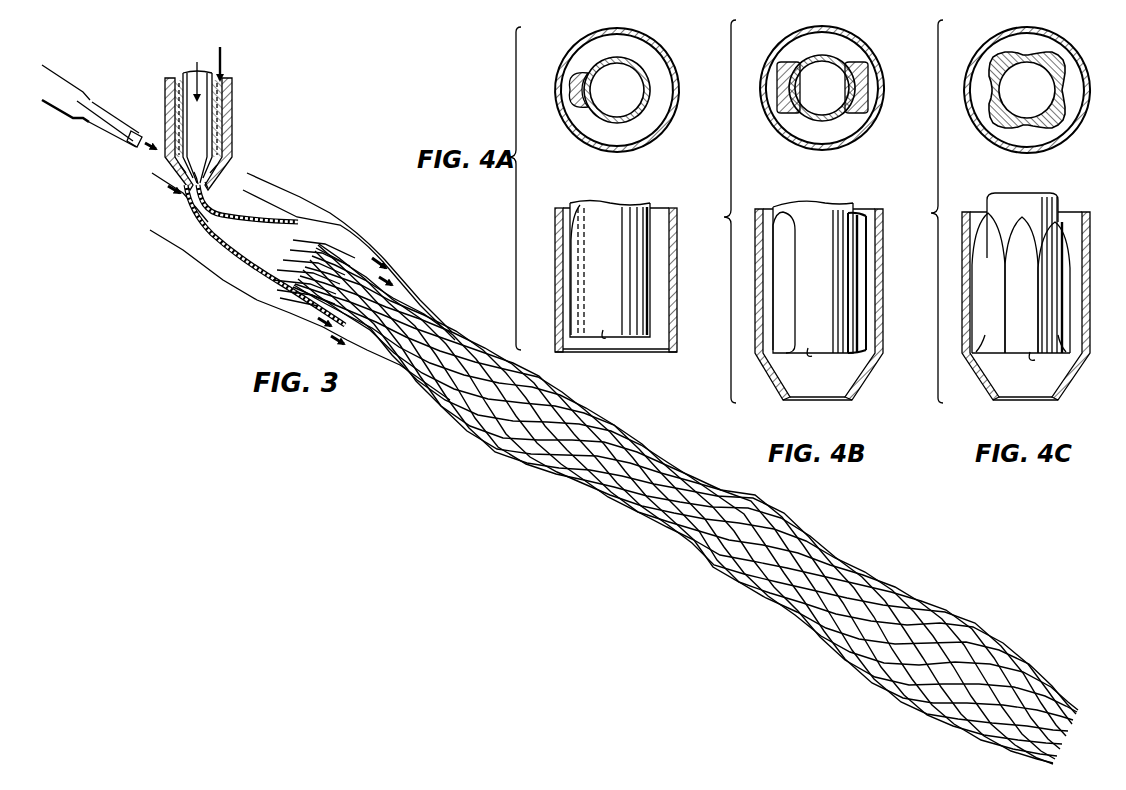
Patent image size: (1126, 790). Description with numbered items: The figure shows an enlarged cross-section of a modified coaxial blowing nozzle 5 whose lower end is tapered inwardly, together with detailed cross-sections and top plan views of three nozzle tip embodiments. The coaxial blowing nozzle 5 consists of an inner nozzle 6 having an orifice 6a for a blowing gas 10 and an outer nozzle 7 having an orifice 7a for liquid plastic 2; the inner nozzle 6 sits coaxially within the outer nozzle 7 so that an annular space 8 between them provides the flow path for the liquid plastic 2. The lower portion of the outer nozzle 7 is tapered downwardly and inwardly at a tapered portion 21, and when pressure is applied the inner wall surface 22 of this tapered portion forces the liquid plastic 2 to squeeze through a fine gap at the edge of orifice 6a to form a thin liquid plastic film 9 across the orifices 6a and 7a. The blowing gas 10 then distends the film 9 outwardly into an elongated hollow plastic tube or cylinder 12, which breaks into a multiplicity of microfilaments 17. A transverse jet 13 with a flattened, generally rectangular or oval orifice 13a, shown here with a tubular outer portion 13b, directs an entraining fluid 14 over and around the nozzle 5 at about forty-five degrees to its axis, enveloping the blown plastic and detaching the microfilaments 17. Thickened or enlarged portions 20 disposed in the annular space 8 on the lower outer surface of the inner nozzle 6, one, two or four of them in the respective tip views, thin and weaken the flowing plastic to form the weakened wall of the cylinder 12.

In FIG. 3, the liquid plastic 2 is at (220, 53).
In FIG. 3, the coaxial blowing nozzle 5 is at (214, 111).
In FIG. 3, the inner nozzle 6 is at (214, 124).
In FIG. 4A, the inner nozzle 6 is at (596, 126).
In FIG. 4B, the inner nozzle 6 is at (797, 55).
In FIG. 4C, the inner nozzle 6 is at (1050, 138).
In FIG. 3, the orifice of inner nozzle 6a is at (193, 132).
In FIG. 4A, the orifice of inner nozzle 6a is at (604, 330).
In FIG. 4B, the orifice of inner nozzle 6a is at (809, 348).
In FIG. 4C, the orifice of inner nozzle 6a is at (1030, 352).
In FIG. 3, the outer nozzle 7 is at (232, 137).
In FIG. 4A, the outer nozzle 7 is at (558, 112).
In FIG. 4B, the outer nozzle 7 is at (800, 32).
In FIG. 4C, the outer nozzle 7 is at (1075, 130).
In FIG. 3, the orifice of outer nozzle 7a is at (188, 203).
In FIG. 4A, the orifice of outer nozzle 7a is at (670, 360).
In FIG. 4B, the orifice of outer nozzle 7a is at (814, 400).
In FIG. 4C, the orifice of outer nozzle 7a is at (1040, 404).
In FIG. 3, the annular space 8 is at (222, 112).
In FIG. 4A, the annular space 8 is at (652, 128).
In FIG. 4B, the annular space 8 is at (845, 48).
In FIG. 4C, the annular space 8 is at (1070, 60).
In FIG. 3, the liquid plastic film 9 is at (177, 167).
In FIG. 4A, the liquid plastic film 9 is at (618, 345).
In FIG. 4B, the liquid plastic film 9 is at (800, 370).
In FIG. 4C, the liquid plastic film 9 is at (1045, 378).
In FIG. 3, the blowing gas 10 is at (199, 72).
In FIG. 4A, the blowing gas 10 is at (635, 80).
In FIG. 4B, the blowing gas 10 is at (835, 75).
In FIG. 4C, the blowing gas 10 is at (1010, 75).
In FIG. 3, the elongated hollow plastic tube or cylinder 12 is at (340, 224).
In FIG. 3, the transverse jet 13 is at (60, 73).
In FIG. 3, the transverse jet nozzle orifice 13a is at (137, 148).
In FIG. 3, the air nozzle pipe 13b is at (112, 108).
In FIG. 3, the entraining fluid 14 is at (100, 130).
In FIG. 3, the microfilaments 17 is at (463, 414).
In FIG. 3, the thickened or enlarged portions 20 is at (178, 96).
In FIG. 4A, the thickened or enlarged portions 20 is at (580, 68).
In FIG. 4B, the thickened or enlarged portions 20 is at (866, 85).
In FIG. 4C, the thickened or enlarged portions 20 is at (1035, 50).
In FIG. 3, the tapered portion 21 is at (208, 184).
In FIG. 4B, the tapered portion 21 is at (872, 380).
In FIG. 4C, the tapered portion 21 is at (980, 388).
In FIG. 3, the inner wall surface 22 is at (219, 167).
In FIG. 4B, the inner wall surface 22 is at (865, 368).
In FIG. 4C, the inner wall surface 22 is at (983, 378).